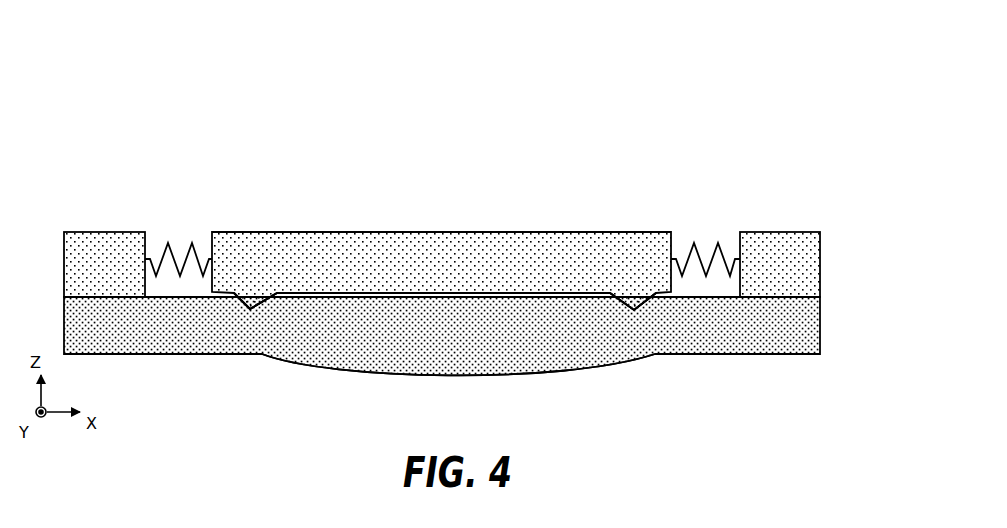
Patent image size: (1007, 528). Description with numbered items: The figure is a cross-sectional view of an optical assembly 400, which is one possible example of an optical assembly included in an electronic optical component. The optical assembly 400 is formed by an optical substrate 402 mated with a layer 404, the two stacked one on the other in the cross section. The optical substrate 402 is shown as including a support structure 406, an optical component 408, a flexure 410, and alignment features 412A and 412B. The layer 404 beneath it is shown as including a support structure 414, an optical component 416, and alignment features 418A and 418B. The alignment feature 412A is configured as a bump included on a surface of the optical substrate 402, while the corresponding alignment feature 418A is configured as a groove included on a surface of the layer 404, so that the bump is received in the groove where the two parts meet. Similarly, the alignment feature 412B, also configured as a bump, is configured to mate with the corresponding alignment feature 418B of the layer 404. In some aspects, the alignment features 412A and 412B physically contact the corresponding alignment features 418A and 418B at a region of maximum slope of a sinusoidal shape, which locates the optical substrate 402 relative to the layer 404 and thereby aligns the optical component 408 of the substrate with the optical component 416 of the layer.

The optical assembly 400 is at (800, 85).
The optical substrate 402 is at (828, 232).
The layer 404 is at (828, 297).
The support structure 406 is at (88, 240).
The optical component 408 is at (459, 240).
The flexure 410 is at (169, 243).
The alignment feature 412A is at (257, 290).
The alignment feature 412B is at (638, 290).
The support structure 414 is at (750, 347).
The optical component 416 is at (470, 368).
The alignment feature 418A is at (252, 312).
The alignment feature 418B is at (636, 313).